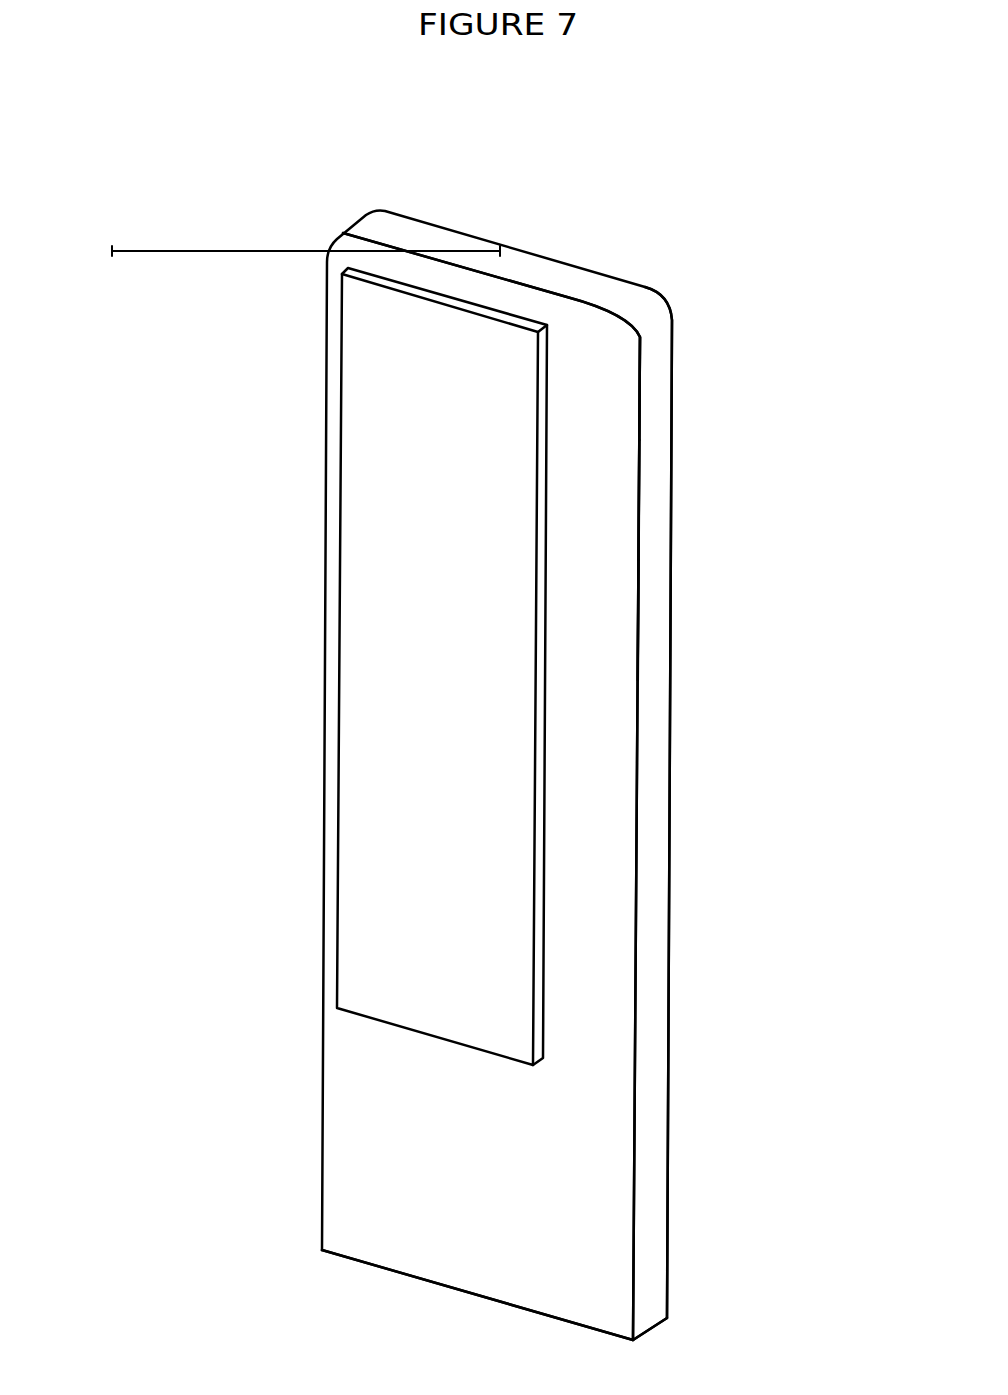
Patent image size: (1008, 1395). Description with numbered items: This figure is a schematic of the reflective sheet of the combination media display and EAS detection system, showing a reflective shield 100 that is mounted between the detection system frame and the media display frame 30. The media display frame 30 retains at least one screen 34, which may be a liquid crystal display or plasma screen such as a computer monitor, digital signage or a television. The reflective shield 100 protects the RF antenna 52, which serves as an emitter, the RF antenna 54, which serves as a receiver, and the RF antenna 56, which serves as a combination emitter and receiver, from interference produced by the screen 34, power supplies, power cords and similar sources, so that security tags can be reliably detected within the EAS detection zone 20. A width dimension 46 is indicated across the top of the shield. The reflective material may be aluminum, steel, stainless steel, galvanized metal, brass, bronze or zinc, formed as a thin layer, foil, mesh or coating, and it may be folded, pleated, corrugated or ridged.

The reflective shield 100 is at (608, 776).
The EAS detection zone 20 is at (672, 643).
The media display frame 30 is at (613, 705).
The screen 34 is at (373, 528).
The width dimension 46 is at (250, 250).
The RF antenna 52 is at (615, 523).
The RF antenna 54 is at (615, 553).
The RF antenna 56 is at (615, 583).